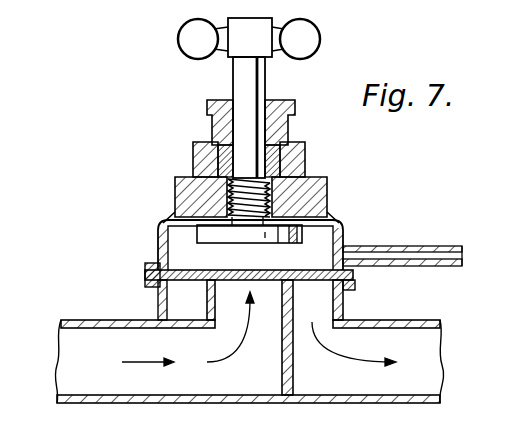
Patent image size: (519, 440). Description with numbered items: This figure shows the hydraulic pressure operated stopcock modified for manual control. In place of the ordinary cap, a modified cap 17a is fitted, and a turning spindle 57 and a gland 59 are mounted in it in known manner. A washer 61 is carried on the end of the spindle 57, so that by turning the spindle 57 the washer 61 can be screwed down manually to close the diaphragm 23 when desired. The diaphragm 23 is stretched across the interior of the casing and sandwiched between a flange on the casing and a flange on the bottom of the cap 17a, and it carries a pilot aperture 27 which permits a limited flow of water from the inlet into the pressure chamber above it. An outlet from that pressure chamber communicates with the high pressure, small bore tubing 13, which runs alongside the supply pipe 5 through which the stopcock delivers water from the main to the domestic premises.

The turning spindle 57 is at (190, 47).
The gland 59 is at (288, 157).
The modified cap 17a is at (162, 227).
The washer 61 is at (338, 242).
The small bore tubing 13 is at (417, 248).
The pilot aperture 27 is at (248, 270).
The diaphragm 23 is at (183, 283).
The supply pipe 5 is at (422, 393).